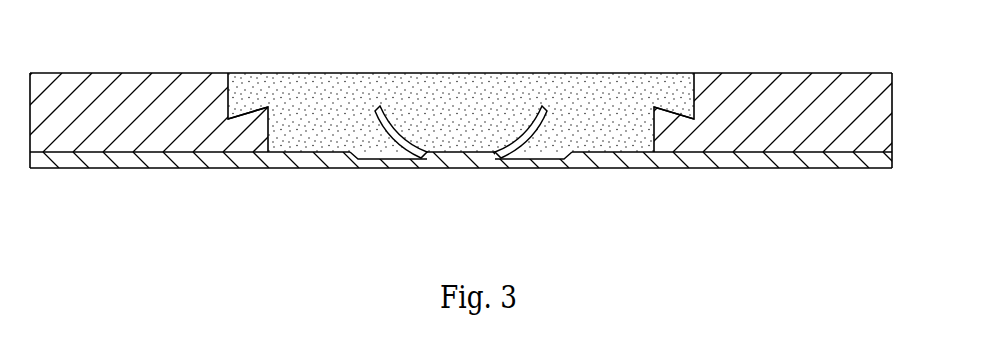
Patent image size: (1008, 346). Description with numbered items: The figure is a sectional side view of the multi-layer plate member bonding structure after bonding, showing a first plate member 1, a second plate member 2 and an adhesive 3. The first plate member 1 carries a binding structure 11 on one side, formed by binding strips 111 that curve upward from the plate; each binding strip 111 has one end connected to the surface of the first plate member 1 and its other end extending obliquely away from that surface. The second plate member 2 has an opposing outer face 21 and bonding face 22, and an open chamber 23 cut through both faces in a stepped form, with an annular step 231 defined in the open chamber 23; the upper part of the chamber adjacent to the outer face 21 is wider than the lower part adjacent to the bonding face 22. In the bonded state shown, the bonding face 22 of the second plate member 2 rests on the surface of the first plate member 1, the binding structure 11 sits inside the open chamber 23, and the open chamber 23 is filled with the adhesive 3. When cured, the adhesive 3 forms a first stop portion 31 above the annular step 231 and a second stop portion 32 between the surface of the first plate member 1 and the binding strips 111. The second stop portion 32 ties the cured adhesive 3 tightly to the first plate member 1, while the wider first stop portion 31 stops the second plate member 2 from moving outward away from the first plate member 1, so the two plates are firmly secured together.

The first plate member 1 is at (464, 136).
The binding structure 11 is at (471, 136).
The binding strips 111 is at (387, 113).
The second plate member 2 is at (481, 124).
The outer face 21 is at (792, 73).
The bonding face 22 is at (773, 153).
The open chamber 23 is at (274, 145).
The annular step 231 is at (240, 117).
The adhesive 3 is at (534, 68).
The first stop portion 31 is at (248, 87).
The second stop portion 32 is at (400, 155).